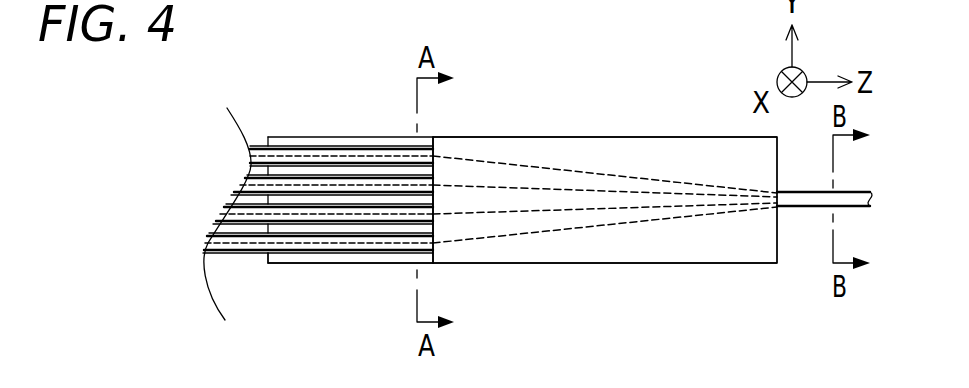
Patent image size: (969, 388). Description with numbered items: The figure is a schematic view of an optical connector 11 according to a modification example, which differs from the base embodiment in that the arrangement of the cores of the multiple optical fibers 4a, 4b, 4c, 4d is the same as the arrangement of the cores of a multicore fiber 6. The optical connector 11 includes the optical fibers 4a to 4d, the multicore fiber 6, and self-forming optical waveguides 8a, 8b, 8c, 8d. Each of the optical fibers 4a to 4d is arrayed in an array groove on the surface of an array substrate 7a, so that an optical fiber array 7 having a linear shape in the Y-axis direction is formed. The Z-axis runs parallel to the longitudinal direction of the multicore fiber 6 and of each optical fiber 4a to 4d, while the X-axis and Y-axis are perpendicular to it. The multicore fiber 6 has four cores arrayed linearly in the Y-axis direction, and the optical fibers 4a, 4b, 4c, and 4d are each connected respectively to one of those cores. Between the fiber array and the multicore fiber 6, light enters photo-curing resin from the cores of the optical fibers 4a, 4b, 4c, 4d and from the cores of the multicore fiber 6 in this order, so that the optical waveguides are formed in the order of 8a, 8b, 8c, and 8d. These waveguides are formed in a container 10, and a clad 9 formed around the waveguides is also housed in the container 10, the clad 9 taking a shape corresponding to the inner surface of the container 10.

The optical fiber 4a is at (362, 157).
The optical fiber 4b is at (324, 185).
The optical fiber 4c is at (362, 214).
The optical fiber 4d is at (324, 243).
The multicore fiber 6 is at (863, 192).
The optical fiber array 7 is at (302, 137).
The array substrate 7a is at (288, 257).
The self-forming optical waveguide 8a is at (509, 152).
The self-forming optical waveguide 8b is at (562, 176).
The self-forming optical waveguide 8c is at (561, 230).
The self-forming optical waveguide 8d is at (503, 255).
The clad 9 is at (462, 248).
The container 10 is at (718, 237).
The optical connector 11 is at (677, 95).